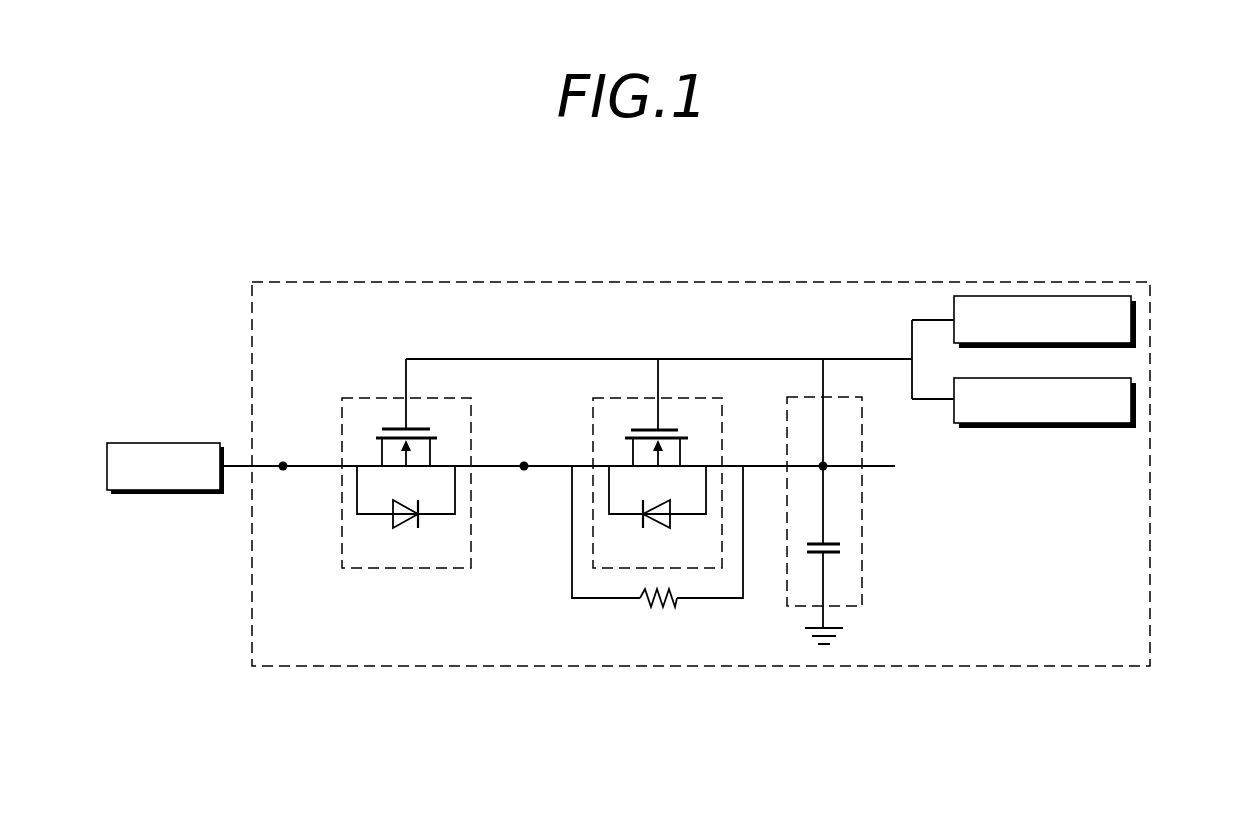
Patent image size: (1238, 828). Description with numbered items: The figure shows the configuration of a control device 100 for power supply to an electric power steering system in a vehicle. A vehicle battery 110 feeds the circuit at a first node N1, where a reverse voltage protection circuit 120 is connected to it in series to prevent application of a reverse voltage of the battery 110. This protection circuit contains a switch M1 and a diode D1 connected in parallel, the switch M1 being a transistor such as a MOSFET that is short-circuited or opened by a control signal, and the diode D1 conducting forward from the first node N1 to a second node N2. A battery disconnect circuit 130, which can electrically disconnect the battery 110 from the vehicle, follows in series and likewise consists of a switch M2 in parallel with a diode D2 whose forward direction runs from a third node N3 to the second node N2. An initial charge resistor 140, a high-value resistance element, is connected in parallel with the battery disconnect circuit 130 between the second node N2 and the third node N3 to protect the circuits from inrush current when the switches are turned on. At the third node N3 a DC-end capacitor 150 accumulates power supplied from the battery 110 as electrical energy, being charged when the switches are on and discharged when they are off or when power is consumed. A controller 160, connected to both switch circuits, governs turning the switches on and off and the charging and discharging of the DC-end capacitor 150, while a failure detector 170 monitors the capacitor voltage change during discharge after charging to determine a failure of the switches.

The control device for power supply 100 is at (659, 281).
The battery 110 is at (162, 443).
The reverse voltage protection circuit 120 is at (406, 511).
The battery disconnect circuit 130 is at (657, 519).
The initial charge resistor 140 is at (657, 607).
The DC-end capacitor 150 is at (862, 545).
The controller 160 is at (1137, 320).
The failure detector 170 is at (1137, 400).
The first node N1 is at (283, 479).
The second node N2 is at (524, 479).
The third node N3 is at (838, 479).
The switch M1 is at (408, 434).
The switch M2 is at (659, 434).
The diode D1 is at (406, 509).
The diode D2 is at (657, 510).